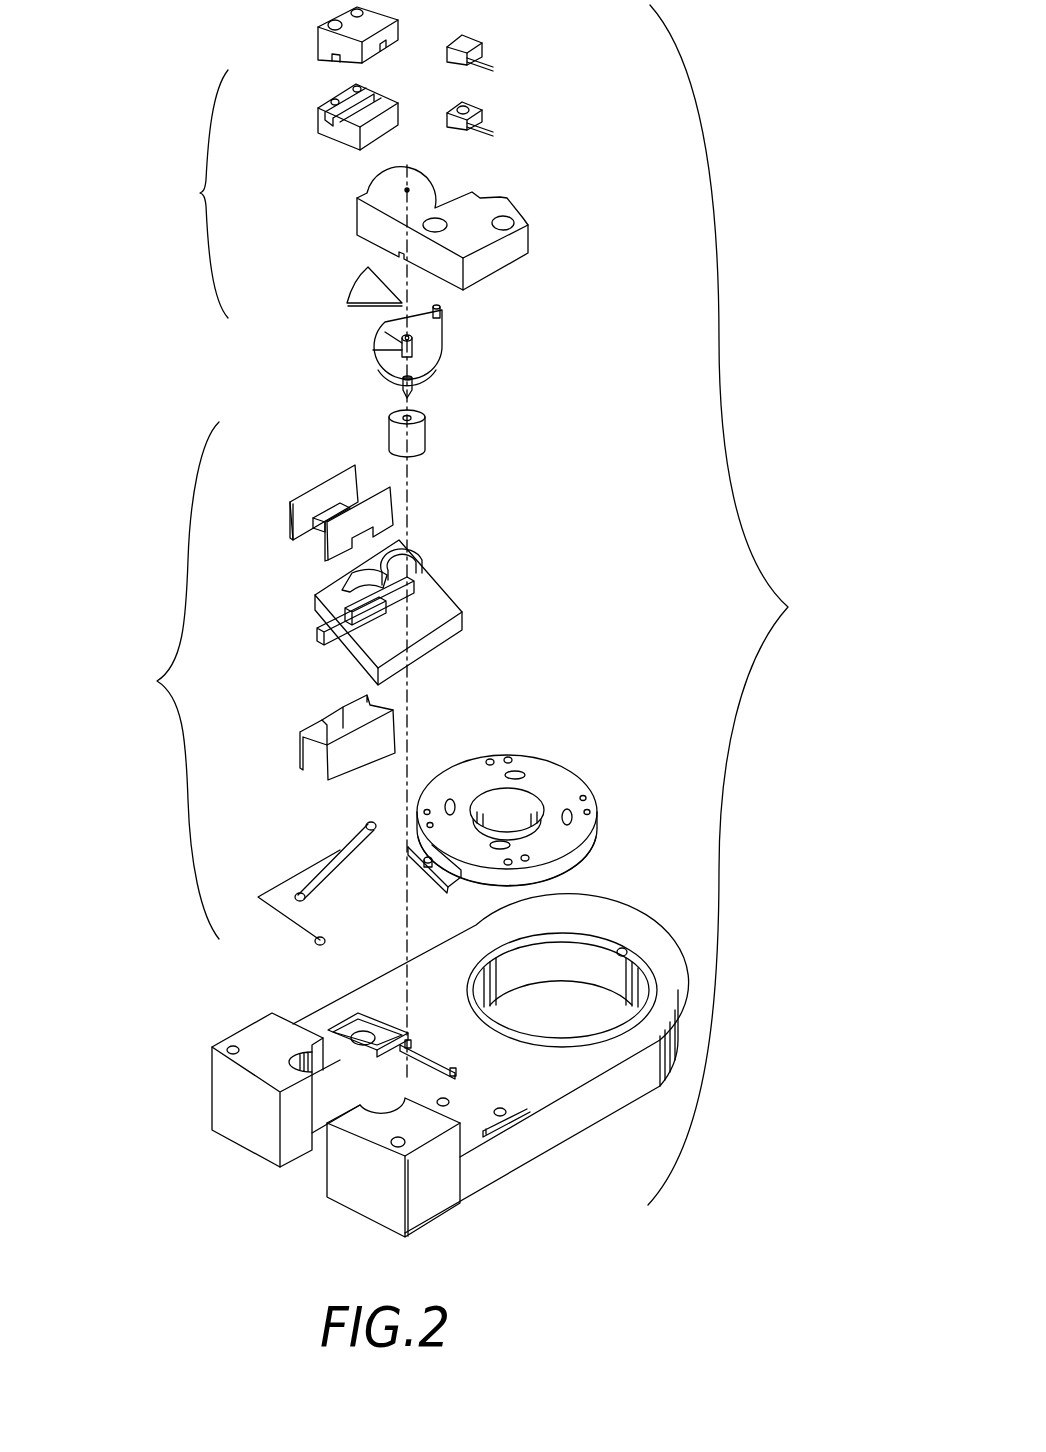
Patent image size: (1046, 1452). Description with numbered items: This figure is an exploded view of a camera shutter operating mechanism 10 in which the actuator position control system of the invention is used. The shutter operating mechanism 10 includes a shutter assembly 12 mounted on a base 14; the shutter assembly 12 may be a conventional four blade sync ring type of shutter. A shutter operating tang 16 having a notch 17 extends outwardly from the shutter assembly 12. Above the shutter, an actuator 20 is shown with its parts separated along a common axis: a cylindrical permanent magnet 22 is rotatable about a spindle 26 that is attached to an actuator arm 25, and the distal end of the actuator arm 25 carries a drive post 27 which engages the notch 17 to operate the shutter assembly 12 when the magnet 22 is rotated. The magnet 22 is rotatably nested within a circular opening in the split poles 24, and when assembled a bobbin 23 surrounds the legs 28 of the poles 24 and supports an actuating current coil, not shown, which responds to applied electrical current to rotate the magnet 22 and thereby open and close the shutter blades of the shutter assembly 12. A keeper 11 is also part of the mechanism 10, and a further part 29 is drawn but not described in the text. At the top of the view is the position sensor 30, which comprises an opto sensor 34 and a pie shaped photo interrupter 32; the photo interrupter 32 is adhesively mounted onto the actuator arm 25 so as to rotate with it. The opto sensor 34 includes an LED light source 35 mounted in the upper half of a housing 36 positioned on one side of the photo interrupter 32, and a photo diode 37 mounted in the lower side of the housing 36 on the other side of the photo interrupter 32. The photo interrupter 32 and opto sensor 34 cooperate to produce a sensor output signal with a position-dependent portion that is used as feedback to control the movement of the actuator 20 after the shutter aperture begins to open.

The shutter operating mechanism 10 is at (739, 605).
The keeper 11 is at (530, 240).
The shutter assembly 12 is at (593, 778).
The base 14 is at (212, 1098).
The shutter operating tang 16 is at (427, 883).
The notch 17 is at (428, 862).
The actuator 20 is at (168, 680).
The permanent magnet 22 is at (389, 433).
The bobbin 23 is at (290, 522).
The poles 24 is at (427, 573).
The actuator arm 25 is at (437, 350).
The spindle 26 is at (413, 388).
The drive post 27 is at (441, 312).
The pole legs 28 is at (387, 612).
The spring 29 is at (302, 871).
The position sensor 30 is at (196, 194).
The photo interrupter 32 is at (347, 303).
The opto sensor 34 is at (538, 77).
The LED light source 35 is at (483, 48).
The opto sensor housing 36 is at (318, 46).
The photo diode 37 is at (483, 113).